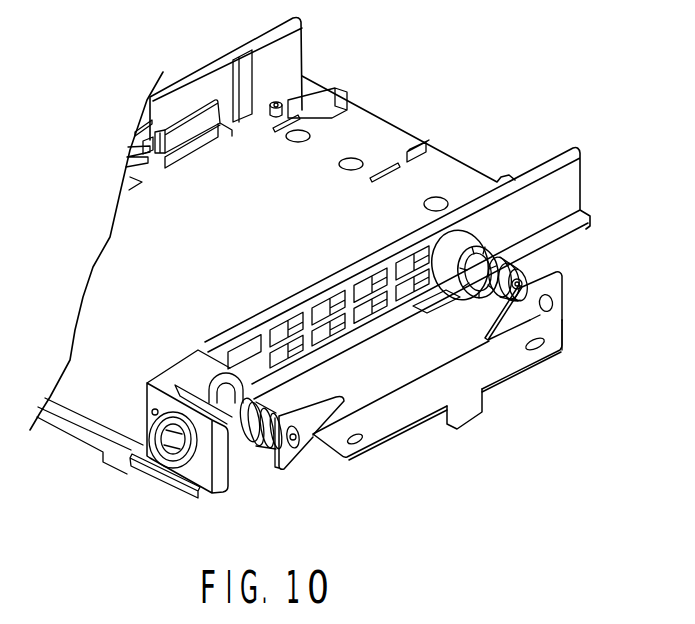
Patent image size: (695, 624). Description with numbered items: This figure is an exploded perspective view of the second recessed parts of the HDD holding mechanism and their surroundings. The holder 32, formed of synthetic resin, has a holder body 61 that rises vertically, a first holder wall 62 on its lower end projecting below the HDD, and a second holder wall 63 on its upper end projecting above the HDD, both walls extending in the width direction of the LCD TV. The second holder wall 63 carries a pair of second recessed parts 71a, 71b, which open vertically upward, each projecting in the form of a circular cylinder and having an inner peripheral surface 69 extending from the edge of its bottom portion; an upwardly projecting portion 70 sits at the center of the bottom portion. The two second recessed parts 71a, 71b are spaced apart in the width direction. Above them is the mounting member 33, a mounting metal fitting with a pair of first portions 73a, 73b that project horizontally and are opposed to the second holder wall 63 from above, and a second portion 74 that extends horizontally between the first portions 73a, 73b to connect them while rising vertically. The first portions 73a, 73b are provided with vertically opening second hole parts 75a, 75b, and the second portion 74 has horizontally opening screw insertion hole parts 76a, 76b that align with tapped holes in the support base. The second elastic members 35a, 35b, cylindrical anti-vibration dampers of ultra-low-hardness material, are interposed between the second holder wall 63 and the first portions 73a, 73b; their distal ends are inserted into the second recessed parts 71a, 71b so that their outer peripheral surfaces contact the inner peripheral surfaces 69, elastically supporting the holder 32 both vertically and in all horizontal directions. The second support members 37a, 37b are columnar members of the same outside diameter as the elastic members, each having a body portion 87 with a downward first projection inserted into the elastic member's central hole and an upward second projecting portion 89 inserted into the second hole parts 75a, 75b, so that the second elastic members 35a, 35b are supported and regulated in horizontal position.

The holder 32 is at (262, 33).
The mounting member 33 is at (510, 385).
The second elastic member 35a is at (252, 446).
The second elastic member 35b is at (505, 258).
The second support member 37a is at (279, 469).
The second support member 37b is at (534, 271).
The holder body 61 is at (377, 140).
The first holder wall 62 is at (185, 90).
The second holder wall 63 is at (349, 282).
The inner peripheral surface 69 is at (487, 241).
The upwardly projecting portion 70 is at (436, 314).
The second recessed part 71a is at (221, 366).
The second recessed part 71b is at (450, 253).
The first portion 73a is at (306, 450).
The first portion 73b is at (556, 289).
The second portion 74 is at (408, 418).
The second hole part 75a is at (302, 427).
The second hole part 75b is at (553, 305).
The screw insertion hole part 76a is at (371, 444).
The screw insertion hole part 76b is at (545, 346).
The body portion 87 is at (512, 297).
The second projecting portion 89 is at (515, 290).